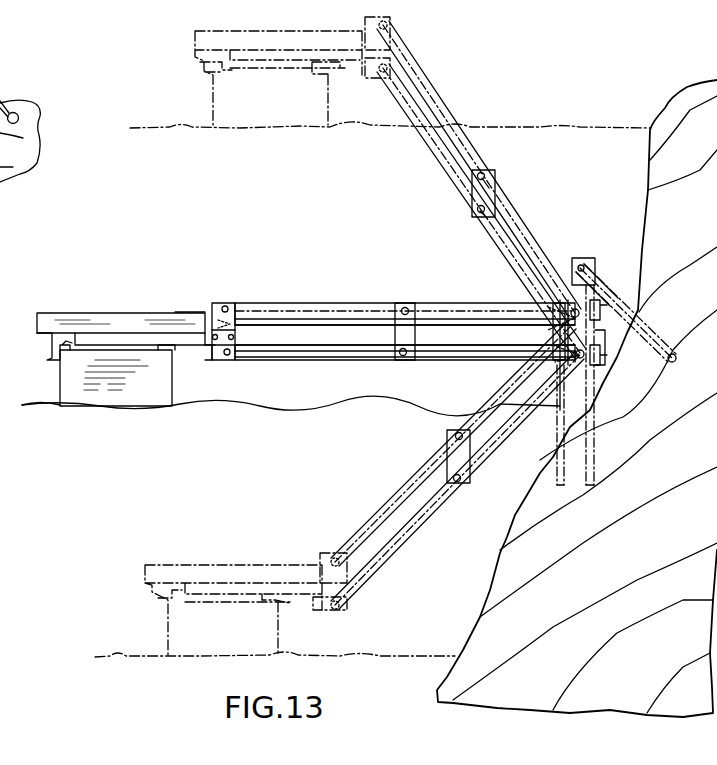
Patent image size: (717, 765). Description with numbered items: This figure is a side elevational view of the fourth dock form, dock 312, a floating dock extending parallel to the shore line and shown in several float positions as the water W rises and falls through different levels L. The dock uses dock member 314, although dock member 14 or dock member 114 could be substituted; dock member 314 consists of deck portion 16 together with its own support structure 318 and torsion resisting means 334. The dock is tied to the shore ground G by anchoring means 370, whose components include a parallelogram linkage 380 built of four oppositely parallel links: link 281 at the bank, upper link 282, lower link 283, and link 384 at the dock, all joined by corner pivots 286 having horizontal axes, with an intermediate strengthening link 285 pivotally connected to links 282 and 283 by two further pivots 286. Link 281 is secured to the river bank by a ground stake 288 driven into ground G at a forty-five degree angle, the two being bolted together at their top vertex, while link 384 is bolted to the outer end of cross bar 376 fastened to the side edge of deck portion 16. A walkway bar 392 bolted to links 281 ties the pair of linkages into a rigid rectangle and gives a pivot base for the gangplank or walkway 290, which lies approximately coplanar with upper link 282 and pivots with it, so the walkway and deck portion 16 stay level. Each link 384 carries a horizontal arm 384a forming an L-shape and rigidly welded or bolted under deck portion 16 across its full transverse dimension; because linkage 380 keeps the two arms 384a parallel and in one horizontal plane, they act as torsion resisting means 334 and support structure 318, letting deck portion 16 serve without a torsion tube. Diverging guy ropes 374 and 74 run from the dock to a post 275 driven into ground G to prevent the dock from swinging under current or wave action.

The guy ropes 74 is at (20, 107).
The post 275 is at (19, 113).
The dock 312 is at (62, 316).
The deck portion 16 is at (108, 313).
The dock member 14 is at (145, 303).
The dock member 114 is at (145, 303).
The dock member 314 is at (175, 275).
The walkway 290 is at (186, 312).
The pivots 286 is at (225, 306).
The anchoring means 370 is at (281, 303).
The upper link 282 is at (318, 303).
The parallelogram linkage 380 is at (455, 303).
The link 281 is at (598, 280).
The ground stake 288 is at (613, 290).
The link 384 is at (237, 327).
The guy ropes 374 is at (344, 336).
The intermediate strengthening link 285 is at (420, 338).
The cross bar 376 is at (208, 355).
The lower link 283 is at (366, 361).
The walkway bar 392 is at (600, 340).
The support structure 318 is at (197, 383).
The torsion resisting means 334 is at (197, 383).
The arm 384a is at (193, 343).
The water W is at (330, 404).
The water level L is at (182, 125).
The ground G is at (510, 570).